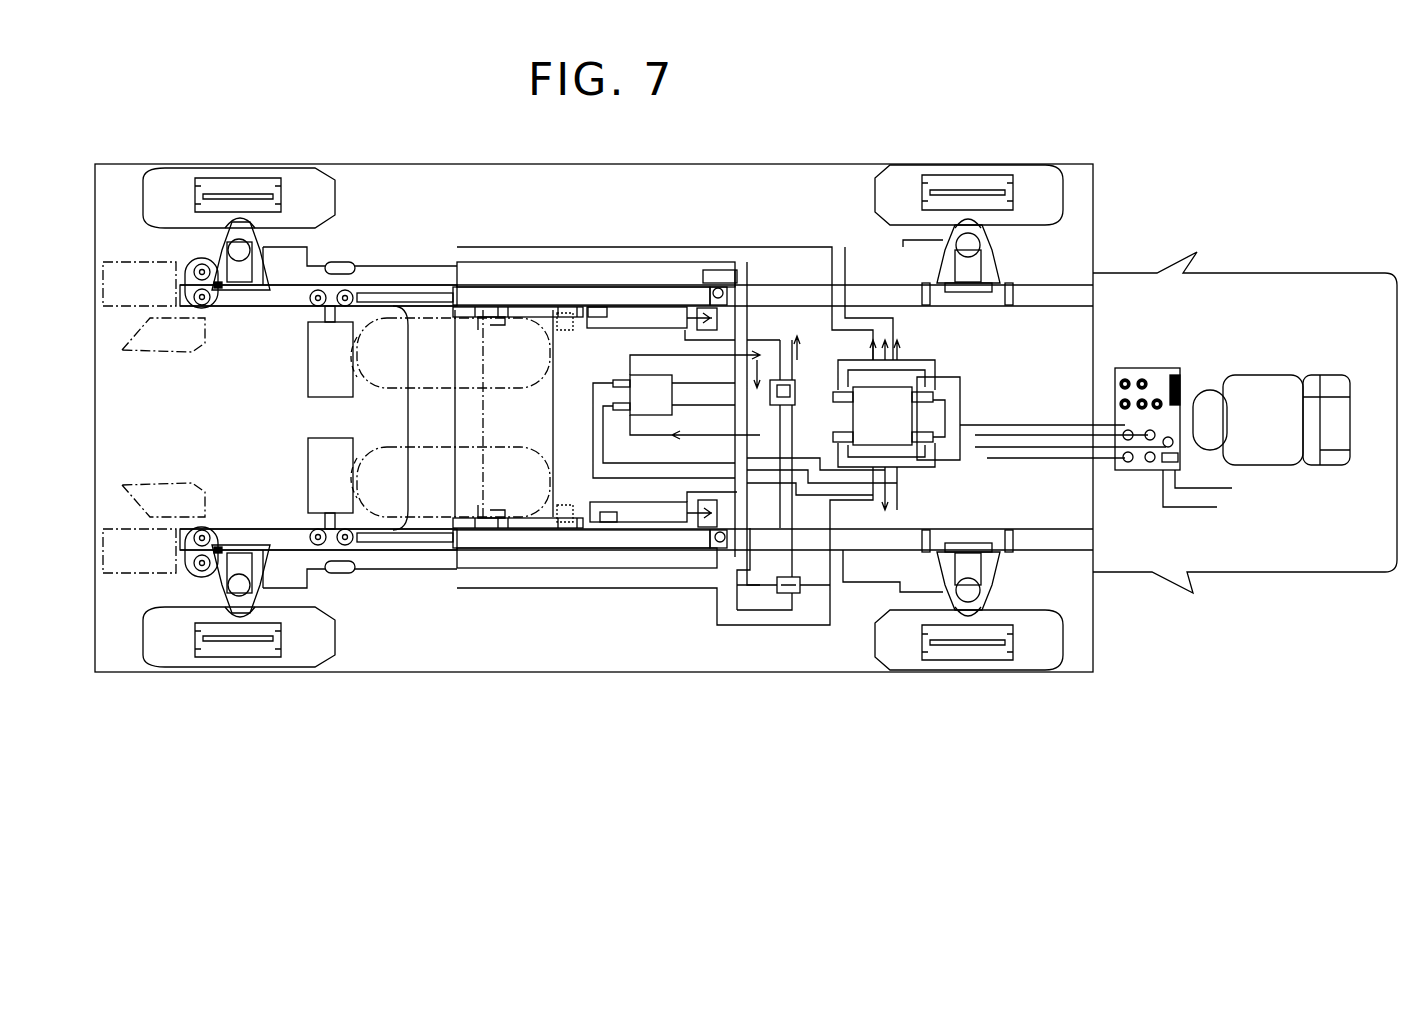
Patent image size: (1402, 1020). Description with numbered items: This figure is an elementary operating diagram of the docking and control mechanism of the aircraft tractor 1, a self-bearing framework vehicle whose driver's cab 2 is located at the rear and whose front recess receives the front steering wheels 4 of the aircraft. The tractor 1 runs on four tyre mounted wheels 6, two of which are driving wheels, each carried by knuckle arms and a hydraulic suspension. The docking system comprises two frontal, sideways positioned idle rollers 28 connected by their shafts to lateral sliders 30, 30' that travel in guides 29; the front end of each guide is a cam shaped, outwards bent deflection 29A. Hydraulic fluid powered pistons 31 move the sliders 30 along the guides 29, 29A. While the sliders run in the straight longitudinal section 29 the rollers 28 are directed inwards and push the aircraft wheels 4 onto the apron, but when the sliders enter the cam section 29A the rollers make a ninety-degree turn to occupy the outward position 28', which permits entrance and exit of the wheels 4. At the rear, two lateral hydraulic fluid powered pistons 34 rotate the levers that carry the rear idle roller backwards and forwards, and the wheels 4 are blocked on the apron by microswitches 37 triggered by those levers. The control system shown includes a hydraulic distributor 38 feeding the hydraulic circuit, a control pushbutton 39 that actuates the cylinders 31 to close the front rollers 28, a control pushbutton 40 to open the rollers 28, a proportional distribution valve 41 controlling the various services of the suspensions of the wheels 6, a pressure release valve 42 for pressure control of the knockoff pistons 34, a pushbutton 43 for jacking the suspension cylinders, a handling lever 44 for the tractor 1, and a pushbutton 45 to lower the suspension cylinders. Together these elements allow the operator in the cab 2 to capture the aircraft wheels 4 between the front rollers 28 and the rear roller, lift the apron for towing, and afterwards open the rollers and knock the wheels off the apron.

The tractor 1 is at (722, 172).
The driver's cab 2 is at (1320, 285).
The front steering wheels 4 is at (423, 327).
The tyre mounted wheels 6 is at (303, 187).
The idle rollers 28 is at (309, 417).
The idle roller open position 28' is at (122, 411).
The guides 29 is at (265, 302).
The cam shaped deflection 29A is at (212, 305).
The lateral sliders 30 is at (349, 424).
The lateral slider 30' is at (212, 524).
The hydraulic fluid powered pistons 31 is at (637, 290).
The lateral hydraulic fluid powered pistons 34 is at (675, 305).
The microswitches 37 is at (597, 307).
The hydraulic pump 38 is at (645, 375).
The control pushbutton 39 is at (1132, 430).
The control pushbutton 40 is at (1128, 462).
The proportional distribution valve 41 is at (903, 414).
The pressure release valve 42 is at (802, 593).
The pushbutton 43 is at (1150, 463).
The handling lever 44 is at (1178, 460).
The pushbutton 45 is at (1168, 420).